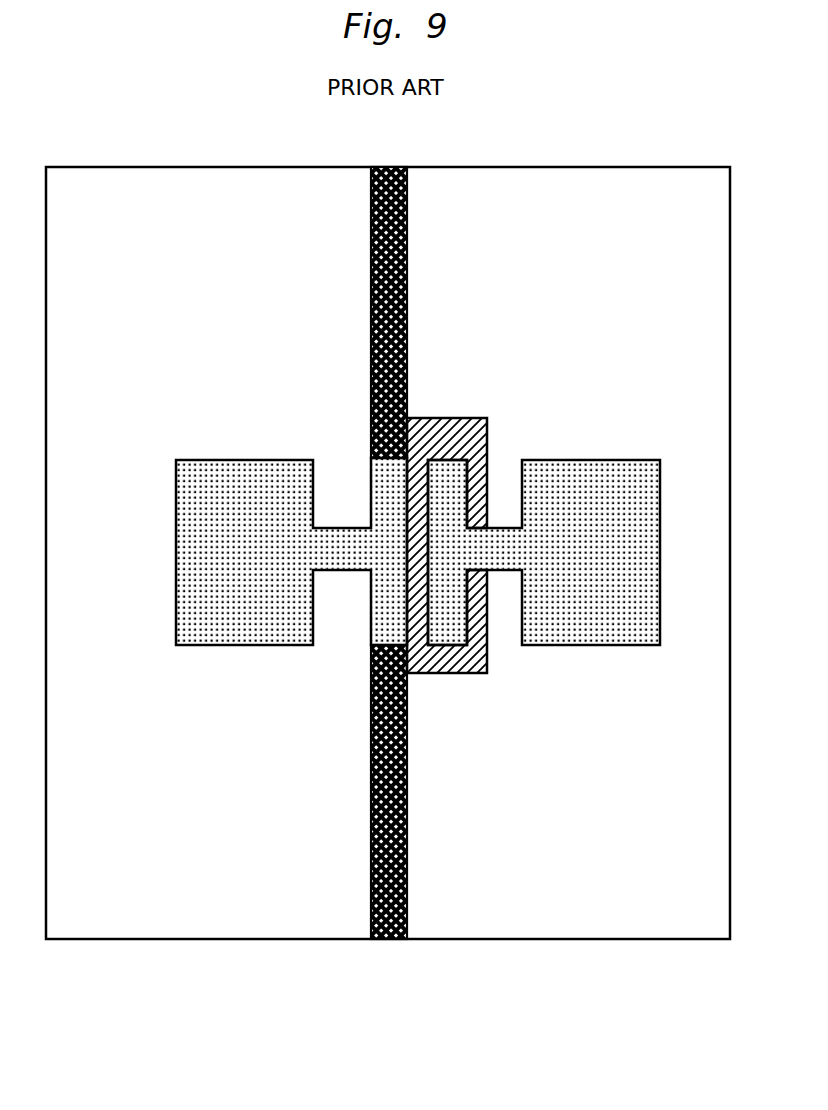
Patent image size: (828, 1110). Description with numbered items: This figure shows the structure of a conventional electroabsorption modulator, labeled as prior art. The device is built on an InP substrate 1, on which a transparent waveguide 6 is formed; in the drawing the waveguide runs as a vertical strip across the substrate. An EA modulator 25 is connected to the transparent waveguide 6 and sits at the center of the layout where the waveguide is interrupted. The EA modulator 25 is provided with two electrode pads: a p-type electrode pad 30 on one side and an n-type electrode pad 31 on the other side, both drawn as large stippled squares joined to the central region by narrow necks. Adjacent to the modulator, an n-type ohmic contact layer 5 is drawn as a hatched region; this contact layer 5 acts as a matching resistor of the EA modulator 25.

The InP substrate 1 is at (120, 207).
The n-type ohmic contact layer 5 is at (473, 432).
The transparent waveguide 6 is at (402, 258).
The EA modulator 25 is at (387, 500).
The p-type electrode pad 30 is at (242, 653).
The n-type electrode pad 31 is at (573, 478).